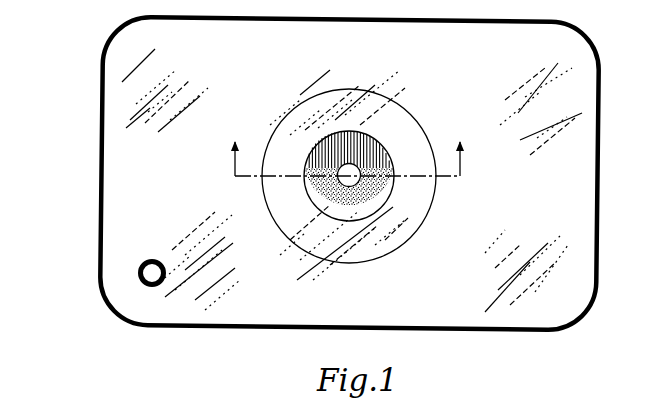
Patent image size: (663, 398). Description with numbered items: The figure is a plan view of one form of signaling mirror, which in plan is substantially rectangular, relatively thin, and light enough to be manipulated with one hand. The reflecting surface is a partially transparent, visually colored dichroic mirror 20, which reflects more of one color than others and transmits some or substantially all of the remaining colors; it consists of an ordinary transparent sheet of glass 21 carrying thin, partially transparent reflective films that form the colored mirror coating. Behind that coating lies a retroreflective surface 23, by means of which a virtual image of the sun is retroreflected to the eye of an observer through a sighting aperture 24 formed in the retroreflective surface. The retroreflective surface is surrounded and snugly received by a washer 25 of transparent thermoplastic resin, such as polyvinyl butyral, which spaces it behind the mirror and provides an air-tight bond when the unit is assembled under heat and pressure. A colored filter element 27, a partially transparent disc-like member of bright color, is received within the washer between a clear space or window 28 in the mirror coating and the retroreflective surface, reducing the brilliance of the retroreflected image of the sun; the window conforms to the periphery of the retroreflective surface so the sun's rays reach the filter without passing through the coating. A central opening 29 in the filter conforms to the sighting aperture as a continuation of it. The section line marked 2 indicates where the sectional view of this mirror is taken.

The dichroic mirror 20 is at (130, 99).
The transparent sheet of glass 21 is at (128, 182).
The retroreflective surface 23 is at (385, 191).
The sighting aperture 24 is at (359, 182).
The washer 25 is at (330, 104).
The colored filter element 27 is at (354, 166).
The window 28 is at (316, 141).
The central opening 29 is at (343, 168).
The section line 2- 2 is at (221, 155).